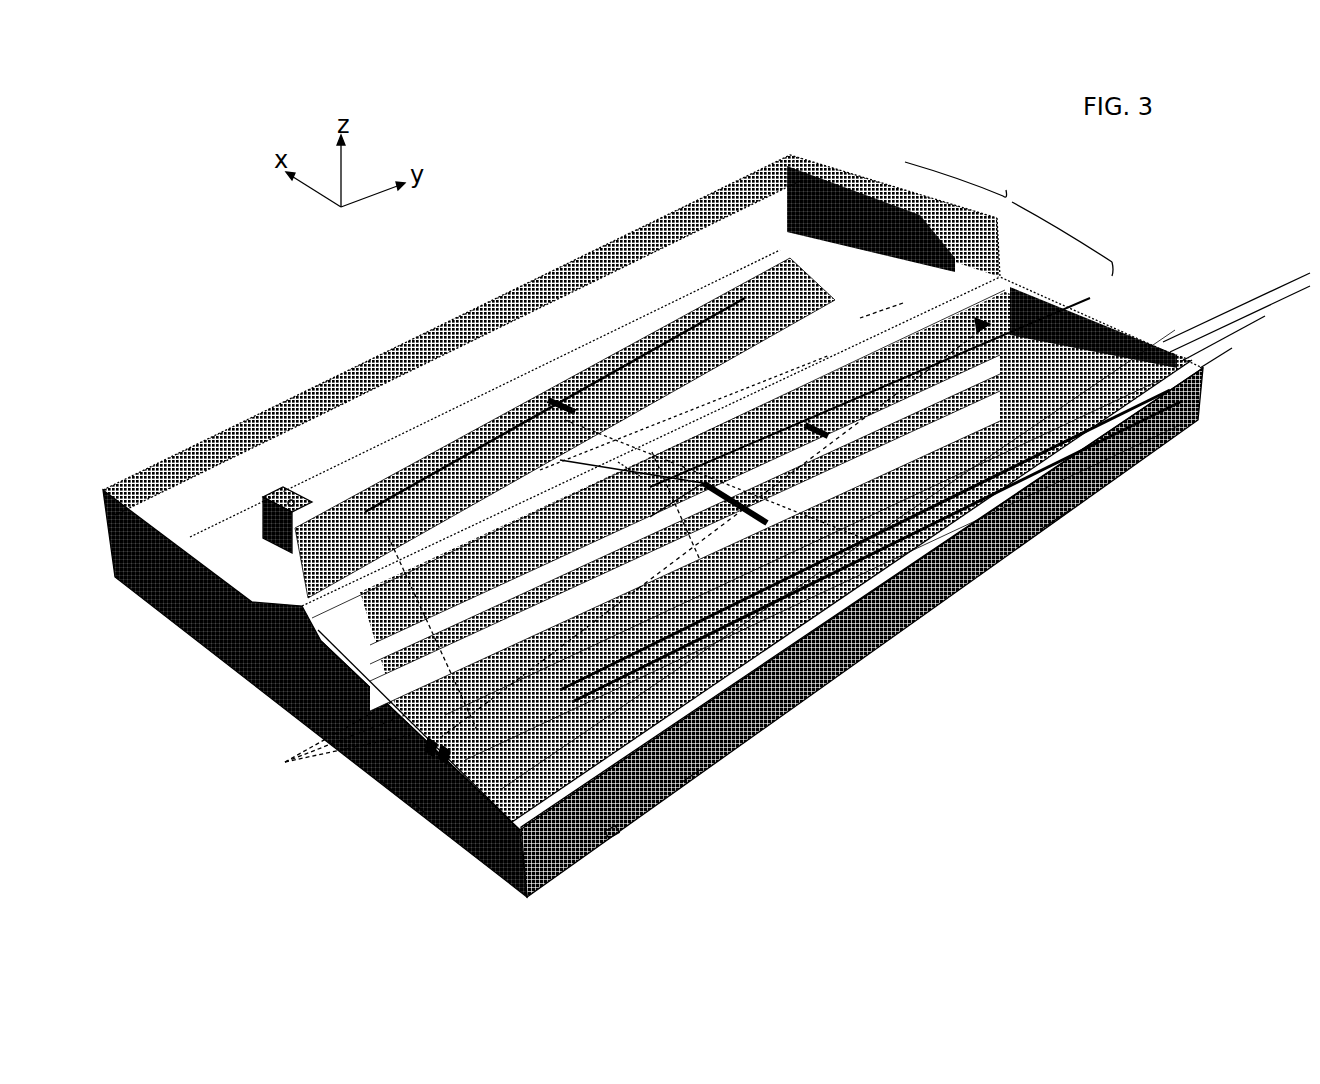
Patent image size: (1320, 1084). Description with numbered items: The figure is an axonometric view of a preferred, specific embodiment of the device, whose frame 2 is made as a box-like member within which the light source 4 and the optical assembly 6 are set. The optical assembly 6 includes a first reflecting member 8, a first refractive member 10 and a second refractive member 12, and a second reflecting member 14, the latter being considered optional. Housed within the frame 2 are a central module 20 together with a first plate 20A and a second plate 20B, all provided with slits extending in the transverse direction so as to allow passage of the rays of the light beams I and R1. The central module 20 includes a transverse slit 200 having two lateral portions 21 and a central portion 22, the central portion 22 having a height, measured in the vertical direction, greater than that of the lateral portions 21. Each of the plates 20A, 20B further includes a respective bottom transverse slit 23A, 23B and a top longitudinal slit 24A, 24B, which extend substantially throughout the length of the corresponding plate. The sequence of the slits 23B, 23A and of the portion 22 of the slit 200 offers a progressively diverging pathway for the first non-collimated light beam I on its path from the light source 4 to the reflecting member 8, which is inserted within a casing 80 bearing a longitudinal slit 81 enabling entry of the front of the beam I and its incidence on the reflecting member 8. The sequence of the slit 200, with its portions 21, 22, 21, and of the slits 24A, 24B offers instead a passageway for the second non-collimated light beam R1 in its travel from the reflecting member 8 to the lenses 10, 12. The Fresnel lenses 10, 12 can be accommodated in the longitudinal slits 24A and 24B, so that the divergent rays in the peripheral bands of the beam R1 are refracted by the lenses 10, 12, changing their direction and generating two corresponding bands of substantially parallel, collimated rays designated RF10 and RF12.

The frame 2 is at (479, 858).
The light source 4 is at (900, 630).
The optical assembly 6 is at (1009, 219).
The first reflecting member 8 is at (433, 485).
The first refractive member 10 is at (1110, 470).
The second refractive member 12 is at (730, 740).
The second reflecting member 14 is at (560, 873).
The central module 20 is at (328, 606).
The first plate 20A is at (387, 787).
The second plate 20B is at (417, 807).
The lateral portions 21 is at (857, 400).
The central portion 22 is at (640, 545).
The bottom transverse slit 23A is at (800, 713).
The bottom transverse slit 23B is at (787, 620).
The top longitudinal slit 24A is at (372, 773).
The top longitudinal slit 24B is at (612, 833).
The casing 80 is at (320, 520).
The longitudinal slit 81 is at (593, 372).
The transverse slit 200 is at (838, 412).
The second non-collimated light beam R1 is at (615, 528).
The collimated band of rays RF10 is at (1040, 530).
The collimated band of rays RF12 is at (682, 782).
The first non-collimated light beam I is at (620, 459).